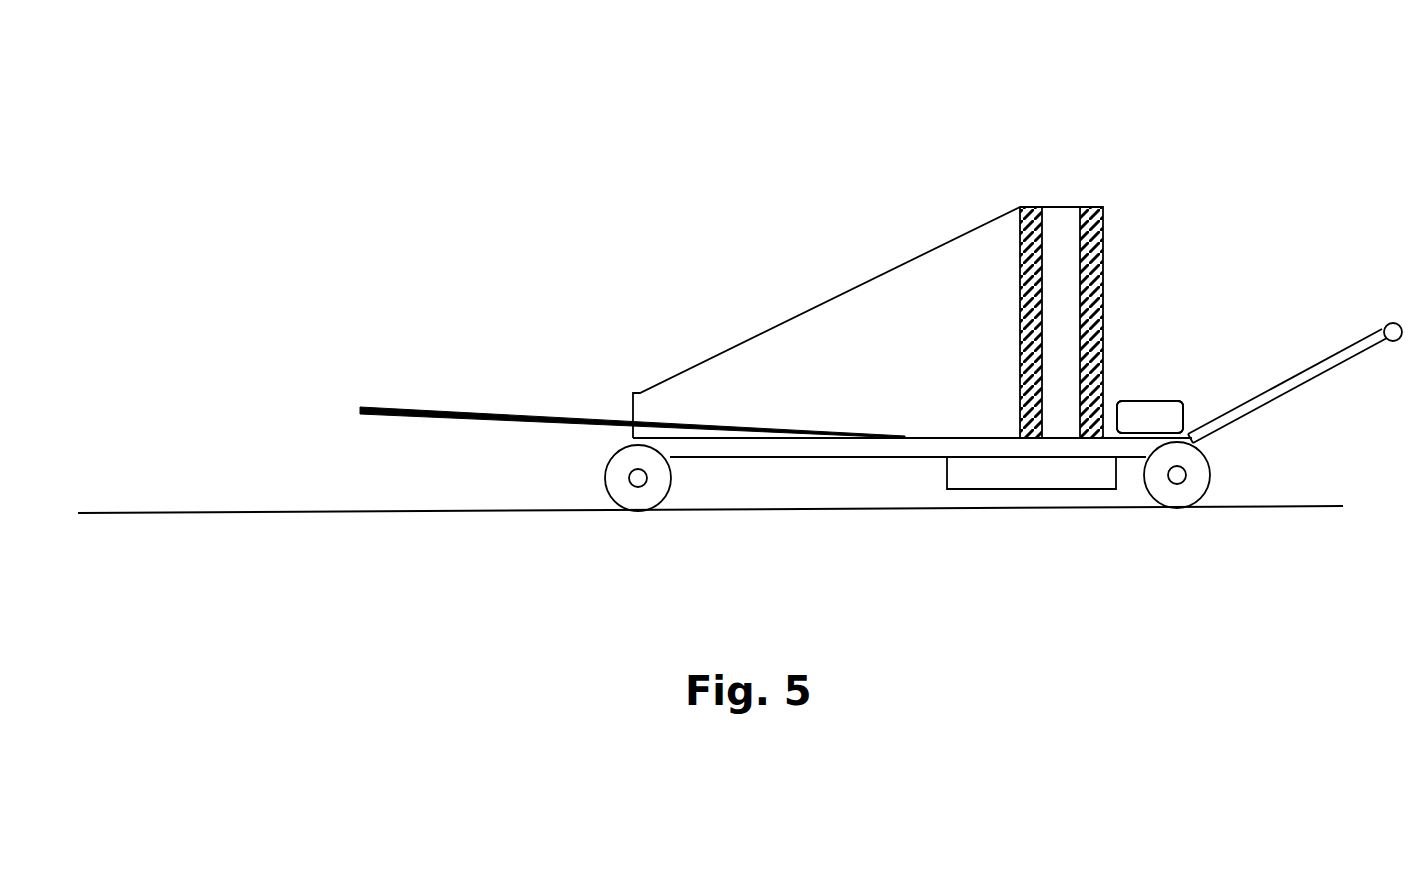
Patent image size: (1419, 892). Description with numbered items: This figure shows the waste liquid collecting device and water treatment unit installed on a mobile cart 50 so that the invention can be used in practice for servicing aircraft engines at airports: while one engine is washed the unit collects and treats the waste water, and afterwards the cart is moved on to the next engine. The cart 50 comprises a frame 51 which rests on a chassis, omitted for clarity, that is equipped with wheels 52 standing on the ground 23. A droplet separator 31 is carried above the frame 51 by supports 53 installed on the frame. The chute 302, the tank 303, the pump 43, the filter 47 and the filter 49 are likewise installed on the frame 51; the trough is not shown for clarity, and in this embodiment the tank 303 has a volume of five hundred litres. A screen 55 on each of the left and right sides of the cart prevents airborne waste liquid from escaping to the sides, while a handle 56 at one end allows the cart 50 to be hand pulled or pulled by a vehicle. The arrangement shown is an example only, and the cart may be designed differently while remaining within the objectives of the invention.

The cart 50 is at (620, 121).
The ground 23 is at (197, 513).
The droplet separator 31 is at (1058, 217).
The supports 53 is at (1030, 208).
The screen 55 is at (815, 325).
The chute 302 is at (458, 418).
The frame 51 is at (837, 451).
The wheels 52 is at (610, 482).
The tank 303 is at (955, 478).
The pump 43 is at (1153, 415).
The filter 47 is at (1150, 417).
The filter 49 is at (1150, 417).
The handle 56 is at (1320, 372).